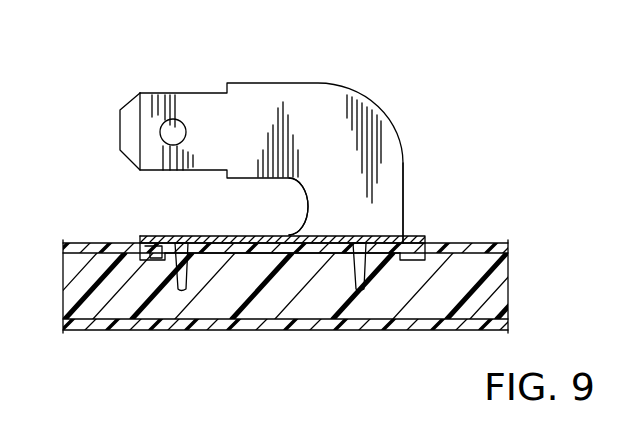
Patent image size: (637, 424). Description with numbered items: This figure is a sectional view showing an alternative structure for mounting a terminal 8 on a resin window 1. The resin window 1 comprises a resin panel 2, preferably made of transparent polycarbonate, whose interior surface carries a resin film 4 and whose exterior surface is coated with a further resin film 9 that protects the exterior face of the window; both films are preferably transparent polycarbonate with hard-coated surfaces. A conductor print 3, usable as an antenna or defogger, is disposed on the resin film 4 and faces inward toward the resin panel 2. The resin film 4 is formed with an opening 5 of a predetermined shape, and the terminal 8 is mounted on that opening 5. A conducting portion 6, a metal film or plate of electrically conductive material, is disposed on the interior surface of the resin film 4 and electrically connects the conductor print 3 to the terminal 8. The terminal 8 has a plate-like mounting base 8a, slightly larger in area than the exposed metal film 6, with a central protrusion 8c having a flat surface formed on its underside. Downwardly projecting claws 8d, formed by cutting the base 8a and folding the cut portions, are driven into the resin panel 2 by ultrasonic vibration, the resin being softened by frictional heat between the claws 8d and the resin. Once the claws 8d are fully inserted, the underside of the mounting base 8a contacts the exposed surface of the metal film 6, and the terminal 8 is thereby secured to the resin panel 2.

The resin window 1 is at (484, 241).
The resin panel 2 is at (310, 308).
The conductor print 3 is at (78, 242).
The resin film 4 is at (108, 242).
The opening 5 is at (148, 240).
The conducting portion 6 is at (234, 254).
The terminal 8 is at (262, 90).
The mounting base 8a is at (338, 240).
The central protrusion 8c is at (270, 236).
The claws 8d is at (189, 274).
The resin film 9 is at (116, 331).